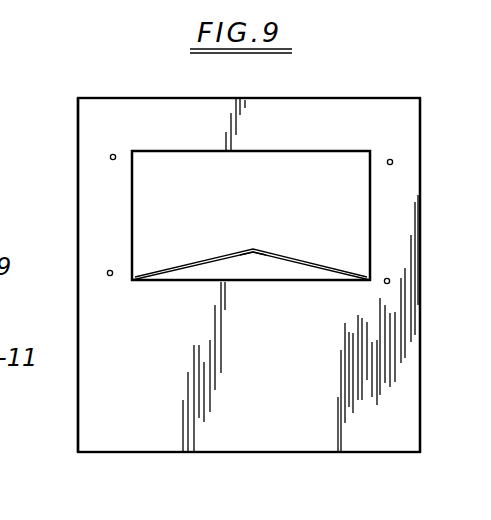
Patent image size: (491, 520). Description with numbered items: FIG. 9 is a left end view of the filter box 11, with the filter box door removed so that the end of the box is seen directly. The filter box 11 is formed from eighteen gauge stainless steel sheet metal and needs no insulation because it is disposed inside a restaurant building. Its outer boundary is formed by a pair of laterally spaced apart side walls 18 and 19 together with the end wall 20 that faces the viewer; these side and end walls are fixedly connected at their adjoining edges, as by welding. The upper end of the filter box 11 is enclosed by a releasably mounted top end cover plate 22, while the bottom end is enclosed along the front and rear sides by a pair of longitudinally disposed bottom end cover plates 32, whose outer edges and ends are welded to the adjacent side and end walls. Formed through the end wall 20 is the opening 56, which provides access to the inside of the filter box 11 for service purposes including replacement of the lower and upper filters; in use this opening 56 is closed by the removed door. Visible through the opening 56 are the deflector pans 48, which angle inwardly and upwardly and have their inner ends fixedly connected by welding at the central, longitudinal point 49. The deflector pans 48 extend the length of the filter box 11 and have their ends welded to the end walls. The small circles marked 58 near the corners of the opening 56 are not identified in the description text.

The filter box 11 is at (74, 424).
The side wall 18 is at (421, 322).
The side wall 19 is at (78, 314).
The end wall 20 is at (86, 388).
The top end cover plate 22 is at (293, 99).
The bottom end cover plate 32 is at (279, 454).
The deflector pan 48 is at (193, 265).
The central longitudinal point 49 is at (253, 249).
The opening 56 is at (263, 153).
The fastener openings 58 is at (114, 154).